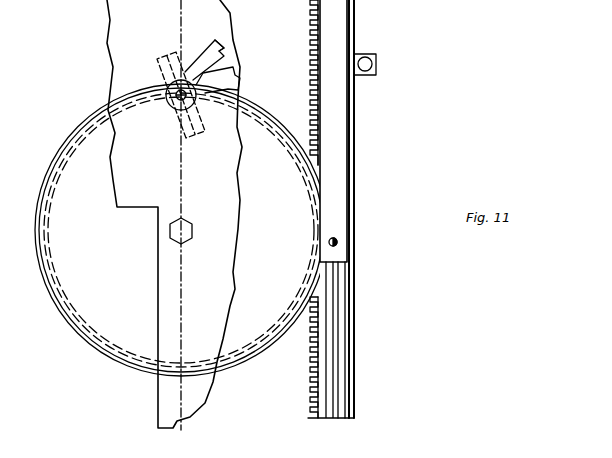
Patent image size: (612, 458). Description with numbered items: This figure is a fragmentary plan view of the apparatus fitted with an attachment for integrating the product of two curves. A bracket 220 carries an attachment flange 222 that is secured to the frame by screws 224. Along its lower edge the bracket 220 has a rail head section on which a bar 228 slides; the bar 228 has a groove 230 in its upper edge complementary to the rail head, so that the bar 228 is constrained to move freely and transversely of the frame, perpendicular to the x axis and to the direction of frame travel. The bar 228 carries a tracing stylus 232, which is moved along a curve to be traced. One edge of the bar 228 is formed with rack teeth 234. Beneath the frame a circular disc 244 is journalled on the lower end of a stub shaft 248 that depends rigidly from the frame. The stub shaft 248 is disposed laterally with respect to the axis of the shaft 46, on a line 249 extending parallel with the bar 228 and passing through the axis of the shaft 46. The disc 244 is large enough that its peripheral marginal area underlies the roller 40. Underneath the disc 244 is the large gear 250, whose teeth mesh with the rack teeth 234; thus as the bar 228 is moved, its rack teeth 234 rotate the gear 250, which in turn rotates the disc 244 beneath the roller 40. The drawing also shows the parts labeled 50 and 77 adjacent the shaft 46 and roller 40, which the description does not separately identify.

The roller 40 is at (157, 60).
The shaft 46 is at (222, 60).
The lever tip 50 is at (223, 48).
The pawl 77 is at (205, 87).
The bracket 220 is at (350, 163).
The attachment flange 222 is at (337, 198).
The screws 224 is at (337, 242).
The bar 228 is at (356, 321).
The groove 230 is at (343, 374).
The tracing stylus 232 is at (377, 62).
The rack teeth 234 is at (307, 357).
The circular disc 244 is at (112, 361).
The stub shaft 248 is at (192, 236).
The line 249 is at (181, 295).
The gear 250 is at (82, 327).